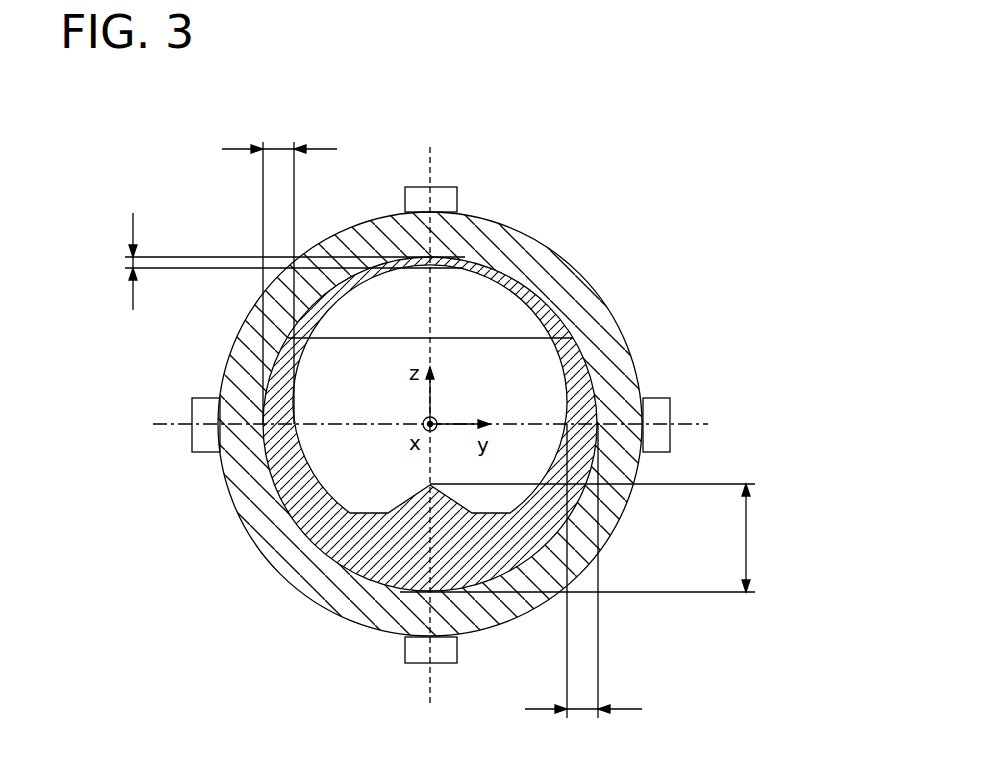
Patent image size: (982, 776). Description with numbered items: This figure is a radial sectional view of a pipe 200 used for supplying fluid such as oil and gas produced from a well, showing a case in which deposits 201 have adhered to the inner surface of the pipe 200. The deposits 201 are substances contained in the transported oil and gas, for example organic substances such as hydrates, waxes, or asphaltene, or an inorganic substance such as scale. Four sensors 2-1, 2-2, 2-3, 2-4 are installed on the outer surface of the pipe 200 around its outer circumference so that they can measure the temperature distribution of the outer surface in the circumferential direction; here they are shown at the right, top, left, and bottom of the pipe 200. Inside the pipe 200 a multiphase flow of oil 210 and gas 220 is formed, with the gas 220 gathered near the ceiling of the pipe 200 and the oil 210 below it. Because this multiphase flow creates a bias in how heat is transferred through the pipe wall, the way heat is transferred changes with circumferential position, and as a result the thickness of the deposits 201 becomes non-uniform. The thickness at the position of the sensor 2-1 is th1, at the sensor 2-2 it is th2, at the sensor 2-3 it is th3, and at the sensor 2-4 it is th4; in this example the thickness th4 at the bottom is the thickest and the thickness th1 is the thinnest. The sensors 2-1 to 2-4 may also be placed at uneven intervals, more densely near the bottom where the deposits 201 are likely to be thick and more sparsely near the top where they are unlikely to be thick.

The pipe 200 is at (600, 327).
The deposits 201 is at (343, 540).
The oil 210 is at (338, 465).
The gas 220 is at (485, 303).
The sensor 2-1 is at (660, 398).
The sensor 2-2 is at (450, 187).
The sensor 2-3 is at (192, 410).
The sensor 2-4 is at (407, 665).
The thickness of the deposits at sensor 2-1 th1 is at (581, 712).
The thickness of the deposits at sensor 2-2 th2 is at (125, 262).
The thickness of the deposits at sensor 2-3 th3 is at (277, 147).
The thickness of the deposits at sensor 2-4 th4 is at (748, 538).